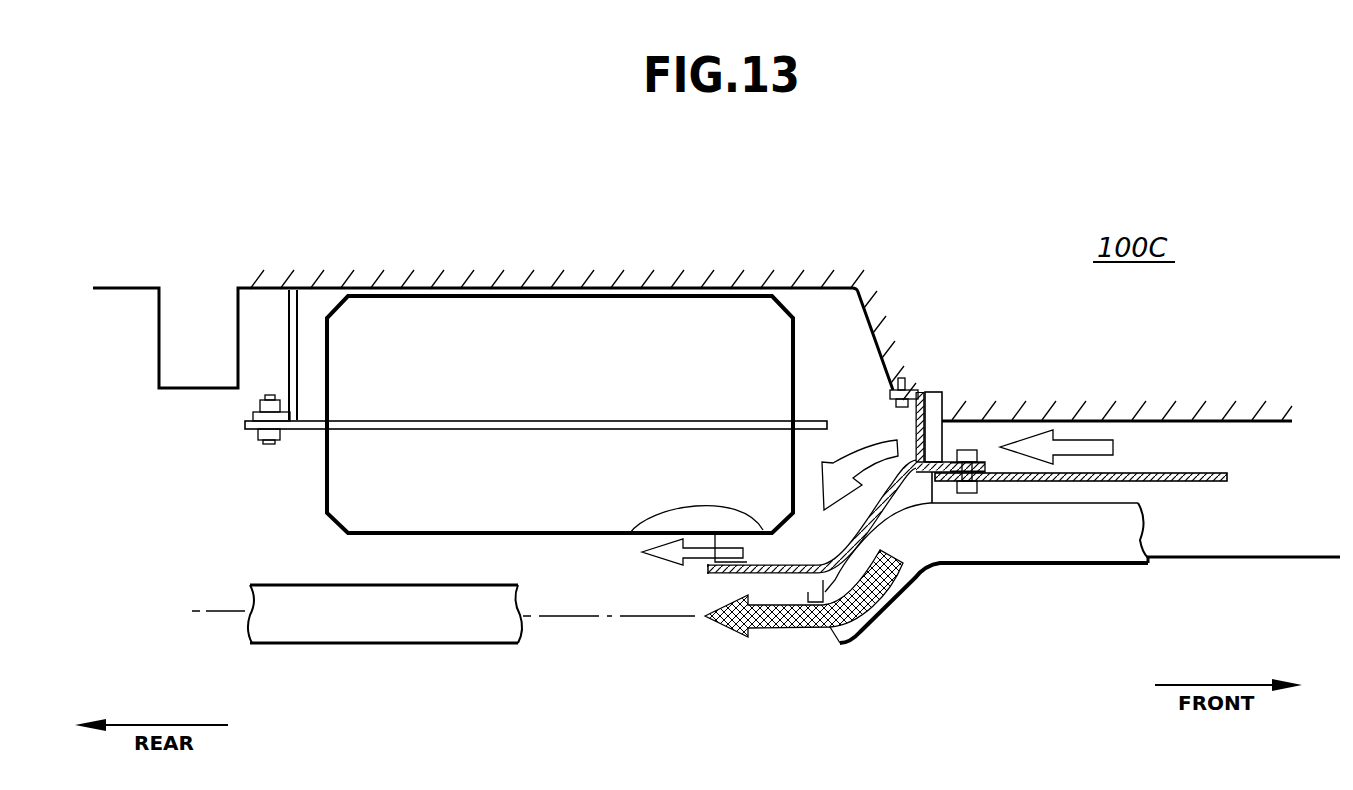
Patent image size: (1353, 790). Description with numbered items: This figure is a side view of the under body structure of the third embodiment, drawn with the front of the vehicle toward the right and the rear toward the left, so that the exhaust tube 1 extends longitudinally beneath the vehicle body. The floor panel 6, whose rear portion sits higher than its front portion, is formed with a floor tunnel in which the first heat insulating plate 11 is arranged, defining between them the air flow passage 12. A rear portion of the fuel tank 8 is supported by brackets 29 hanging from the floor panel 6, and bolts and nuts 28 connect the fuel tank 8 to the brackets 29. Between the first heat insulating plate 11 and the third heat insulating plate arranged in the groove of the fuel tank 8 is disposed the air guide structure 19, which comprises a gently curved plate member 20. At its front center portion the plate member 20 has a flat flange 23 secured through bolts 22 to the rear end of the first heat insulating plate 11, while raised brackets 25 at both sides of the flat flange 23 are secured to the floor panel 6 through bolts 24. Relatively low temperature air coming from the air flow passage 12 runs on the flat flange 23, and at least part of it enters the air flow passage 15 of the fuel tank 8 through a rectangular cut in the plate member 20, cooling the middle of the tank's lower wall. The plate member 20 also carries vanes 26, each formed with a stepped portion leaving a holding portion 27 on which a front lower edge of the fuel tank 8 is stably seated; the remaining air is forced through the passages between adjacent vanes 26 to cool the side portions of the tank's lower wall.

The exhaust tube 1 is at (347, 635).
The floor panel 6 is at (851, 345).
The fuel tank 8 is at (422, 552).
The first heat insulating plate 11 is at (1197, 482).
The air flow passage 12 is at (1088, 432).
The air flow passage 15 is at (636, 533).
The air guide structure 19 is at (818, 605).
The plate member 20 is at (883, 590).
The bolts 22 is at (977, 488).
The flat flange 23 is at (955, 450).
The bolts 24 is at (890, 410).
The raised brackets 25 is at (950, 440).
The vanes 26 is at (763, 550).
The holding portion 27 is at (648, 542).
The bolts and nuts 28 is at (258, 405).
The brackets 29 is at (289, 335).